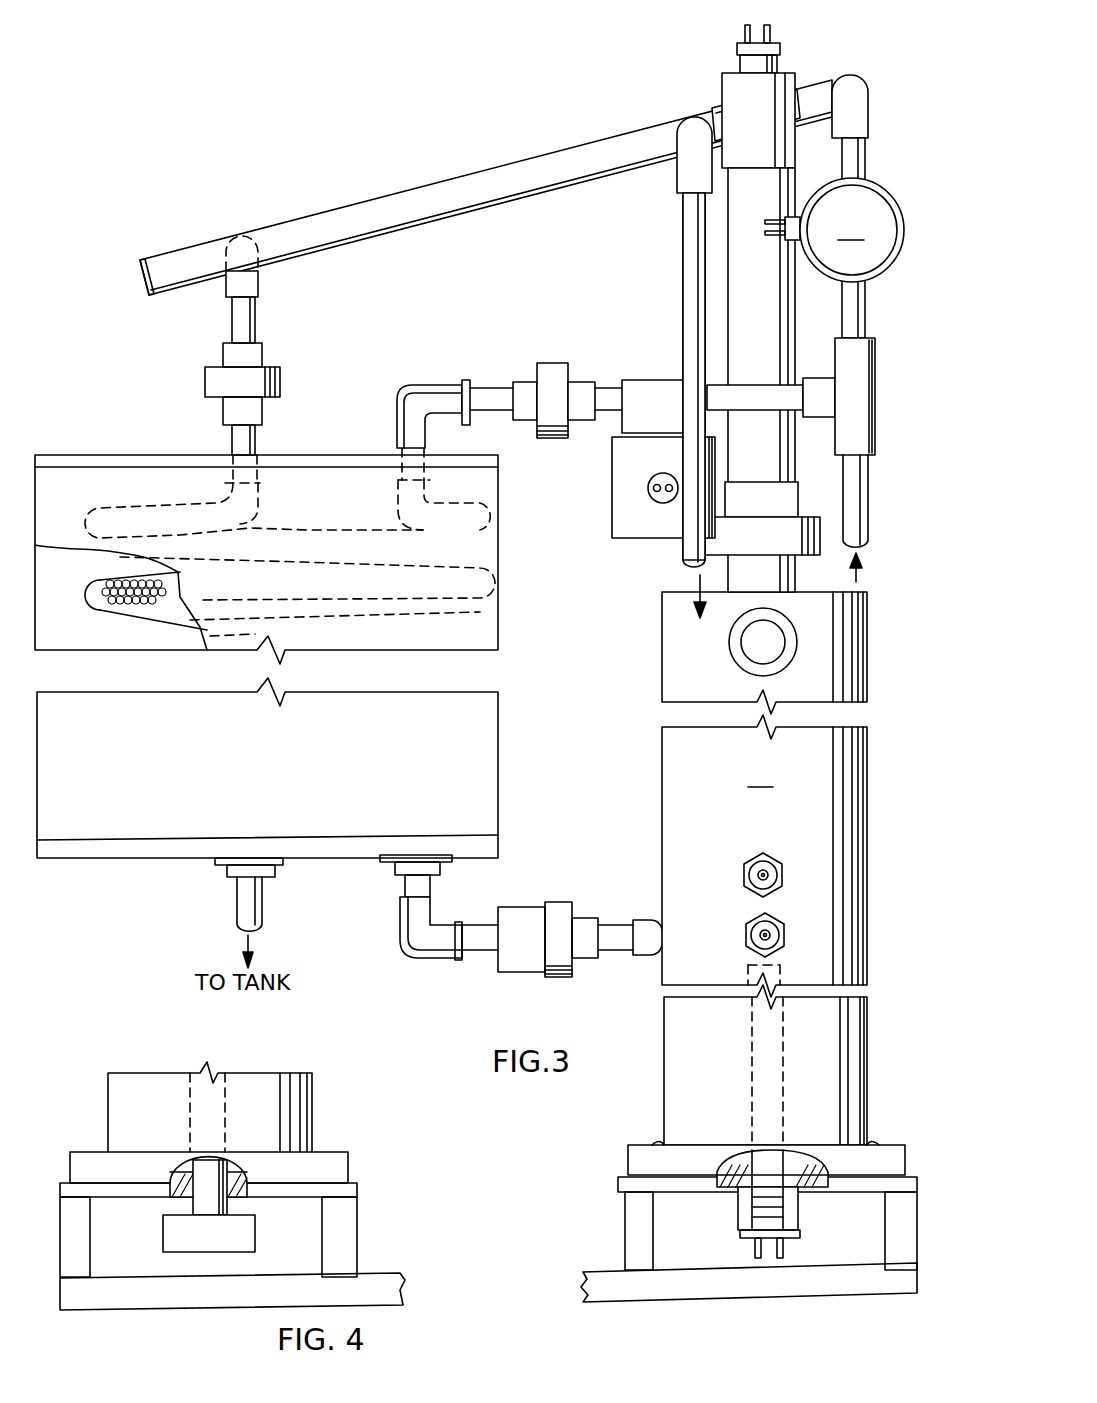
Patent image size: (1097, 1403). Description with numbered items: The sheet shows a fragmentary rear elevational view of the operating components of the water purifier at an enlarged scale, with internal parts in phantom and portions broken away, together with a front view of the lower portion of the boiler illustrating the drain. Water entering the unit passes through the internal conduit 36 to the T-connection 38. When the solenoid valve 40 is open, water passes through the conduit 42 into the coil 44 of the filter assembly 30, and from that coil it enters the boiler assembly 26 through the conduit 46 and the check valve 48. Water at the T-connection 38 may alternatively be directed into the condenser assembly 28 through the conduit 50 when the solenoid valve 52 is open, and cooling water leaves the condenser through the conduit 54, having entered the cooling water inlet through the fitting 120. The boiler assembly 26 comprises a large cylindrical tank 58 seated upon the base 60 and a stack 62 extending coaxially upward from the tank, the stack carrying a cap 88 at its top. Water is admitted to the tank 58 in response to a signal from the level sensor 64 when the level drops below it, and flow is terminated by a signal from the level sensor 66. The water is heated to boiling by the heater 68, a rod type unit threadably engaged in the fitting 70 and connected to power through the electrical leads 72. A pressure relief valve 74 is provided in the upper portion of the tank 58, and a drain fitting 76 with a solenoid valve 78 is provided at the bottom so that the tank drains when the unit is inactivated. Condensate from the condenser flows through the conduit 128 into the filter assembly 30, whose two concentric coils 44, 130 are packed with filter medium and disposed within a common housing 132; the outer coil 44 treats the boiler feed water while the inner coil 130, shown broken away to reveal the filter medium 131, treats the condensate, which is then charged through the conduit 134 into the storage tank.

In FIG. 3, the boiler assembly 26 is at (741, 871).
In FIG. 4, the boiler assembly 26 is at (322, 1091).
In FIG. 3, the condenser assembly 28 is at (414, 180).
In FIG. 3, the filter assembly 30 is at (297, 653).
In FIG. 3, the internal conduit 36 is at (868, 490).
In FIG. 3, the T-connection 38 is at (873, 370).
In FIG. 3, the solenoid valve 40 is at (665, 465).
In FIG. 3, the conduit 42 is at (773, 395).
In FIG. 3, the coil 44 is at (483, 570).
In FIG. 3, the conduit 46 is at (480, 952).
In FIG. 3, the check valve 48 is at (520, 965).
In FIG. 3, the conduit 50 is at (868, 305).
In FIG. 3, the solenoid valve 52 is at (852, 230).
In FIG. 3, the conduit 54 is at (683, 250).
In FIG. 3, the tank 58 is at (662, 780).
In FIG. 3, the base 60 is at (618, 1185).
In FIG. 3, the stack 62 is at (793, 325).
In FIG. 3, the level sensor 64 is at (750, 920).
In FIG. 3, the level sensor 66 is at (752, 858).
In FIG. 3, the heater 68 is at (748, 1075).
In FIG. 3, the fitting 70 is at (798, 1210).
In FIG. 3, the electrical leads 72 is at (780, 1262).
In FIG. 3, the pressure relief valve 74 is at (730, 660).
In FIG. 4, the drain fitting 76 is at (225, 1207).
In FIG. 4, the solenoid valve 78 is at (255, 1240).
In FIG. 3, the cap 88 is at (722, 88).
In FIG. 3, the fitting 120 is at (862, 78).
In FIG. 3, the conduit 128 is at (258, 325).
In FIG. 3, the coil 130 is at (120, 615).
In FIG. 3, the filter medium 131 is at (102, 612).
In FIG. 3, the housing 132 is at (503, 805).
In FIG. 3, the conduit 134 is at (237, 898).